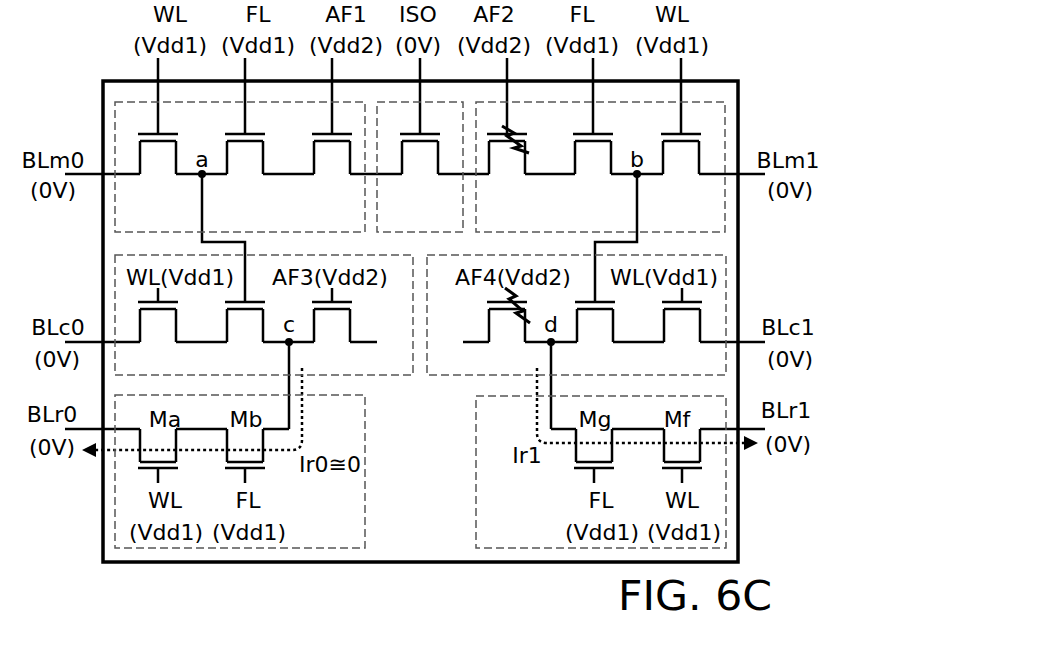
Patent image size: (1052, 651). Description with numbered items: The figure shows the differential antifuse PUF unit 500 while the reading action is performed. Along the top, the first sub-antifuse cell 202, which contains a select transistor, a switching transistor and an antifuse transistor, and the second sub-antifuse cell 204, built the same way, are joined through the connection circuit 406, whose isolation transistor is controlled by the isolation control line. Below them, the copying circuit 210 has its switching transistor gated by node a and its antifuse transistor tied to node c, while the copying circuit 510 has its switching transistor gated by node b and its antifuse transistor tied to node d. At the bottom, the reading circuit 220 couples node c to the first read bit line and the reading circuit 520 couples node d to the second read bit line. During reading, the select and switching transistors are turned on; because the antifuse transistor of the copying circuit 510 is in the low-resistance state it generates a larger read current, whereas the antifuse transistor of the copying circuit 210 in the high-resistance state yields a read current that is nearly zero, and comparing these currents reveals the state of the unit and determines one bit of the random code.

The antifuse PUF unit 500 is at (402, 522).
The first sub-antifuse cell 202 is at (275, 226).
The connection circuit 406 is at (398, 226).
The second sub-antifuse cell 204 is at (539, 226).
The copying circuit 210 is at (366, 367).
The copying circuit 510 is at (430, 367).
The reading circuit 220 is at (316, 522).
The reading circuit 520 is at (479, 522).